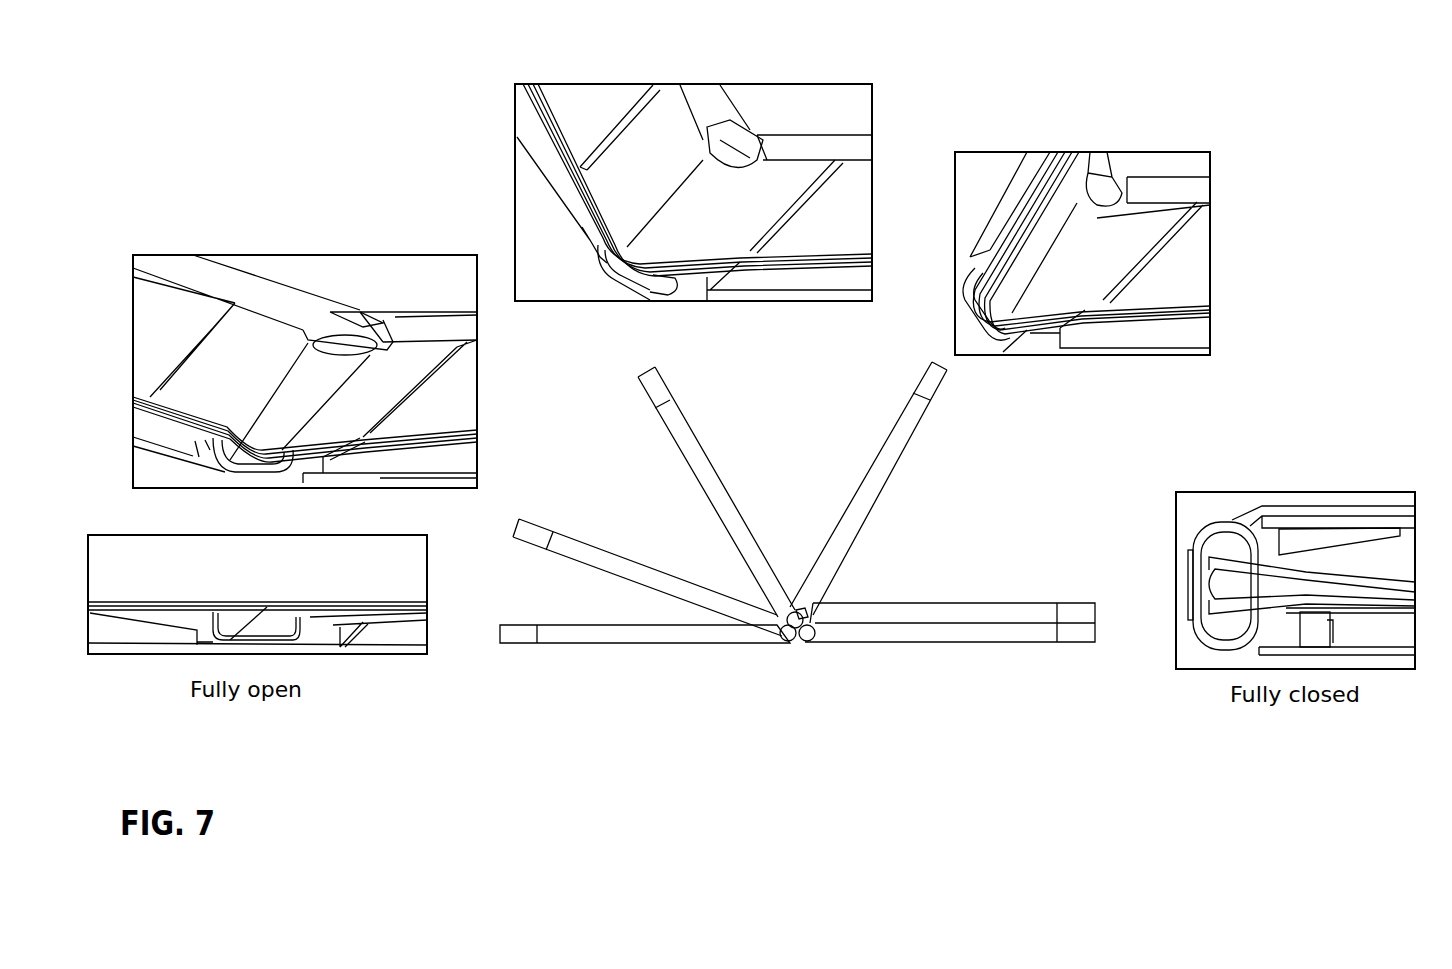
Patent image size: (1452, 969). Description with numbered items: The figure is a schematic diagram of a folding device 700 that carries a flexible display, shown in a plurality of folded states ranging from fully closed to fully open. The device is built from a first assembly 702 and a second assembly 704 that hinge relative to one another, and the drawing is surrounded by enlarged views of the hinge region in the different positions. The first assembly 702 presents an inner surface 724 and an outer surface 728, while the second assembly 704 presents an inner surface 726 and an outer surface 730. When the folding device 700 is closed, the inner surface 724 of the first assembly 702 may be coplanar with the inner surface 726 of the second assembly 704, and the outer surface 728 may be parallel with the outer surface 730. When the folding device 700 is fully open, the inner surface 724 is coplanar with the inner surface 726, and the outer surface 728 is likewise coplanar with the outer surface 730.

The folding device 700 is at (814, 555).
The first assembly 702 is at (647, 554).
The second assembly 704 is at (945, 555).
The inner surface 724 is at (163, 332).
The inner surface 726 is at (457, 405).
The outer surface 728 is at (628, 641).
The outer surface 730 is at (973, 643).